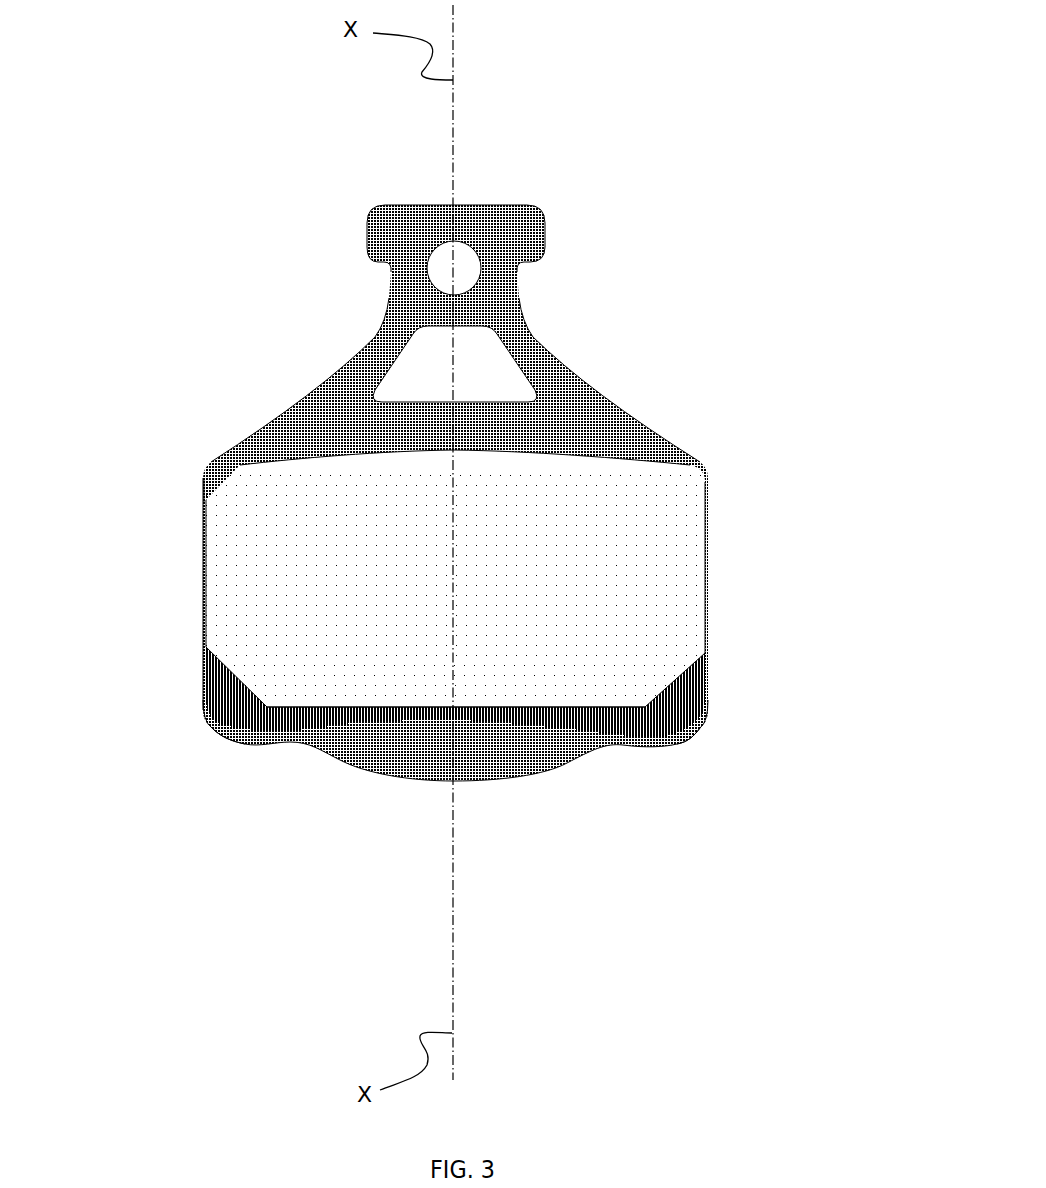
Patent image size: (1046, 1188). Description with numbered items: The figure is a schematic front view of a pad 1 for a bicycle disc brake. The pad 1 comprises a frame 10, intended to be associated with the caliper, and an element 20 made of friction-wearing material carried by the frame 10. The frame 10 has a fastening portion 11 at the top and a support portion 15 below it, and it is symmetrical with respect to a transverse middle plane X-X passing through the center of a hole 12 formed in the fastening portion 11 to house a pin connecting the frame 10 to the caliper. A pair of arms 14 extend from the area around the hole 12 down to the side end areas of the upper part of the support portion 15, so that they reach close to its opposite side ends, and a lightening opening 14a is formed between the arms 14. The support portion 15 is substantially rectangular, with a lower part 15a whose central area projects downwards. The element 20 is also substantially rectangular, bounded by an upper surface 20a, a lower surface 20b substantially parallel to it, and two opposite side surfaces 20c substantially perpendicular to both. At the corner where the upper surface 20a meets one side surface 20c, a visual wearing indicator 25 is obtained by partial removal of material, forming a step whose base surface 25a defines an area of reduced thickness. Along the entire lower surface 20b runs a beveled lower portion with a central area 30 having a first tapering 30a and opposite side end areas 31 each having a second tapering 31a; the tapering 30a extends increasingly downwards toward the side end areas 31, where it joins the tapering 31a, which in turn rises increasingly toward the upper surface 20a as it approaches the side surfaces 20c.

The pad 1 is at (296, 255).
The frame 10 is at (419, 595).
The fastening portion 11 is at (392, 272).
The hole 12 is at (454, 268).
The arms 14 is at (553, 370).
The lightening opening 14a is at (460, 370).
The support portion 15 is at (203, 568).
The lower part 15a is at (427, 775).
The element made of friction-wearing material 20 is at (583, 618).
The upper surface 20a is at (405, 455).
The lower surface 20b is at (477, 725).
The side surfaces 20c is at (203, 620).
The visual wearing indicator 25 is at (203, 467).
The base surface 25a is at (203, 481).
The central area 30 is at (413, 752).
The first tapering 30a is at (392, 715).
The side end areas 31 is at (238, 770).
The second tapering 31a is at (208, 725).